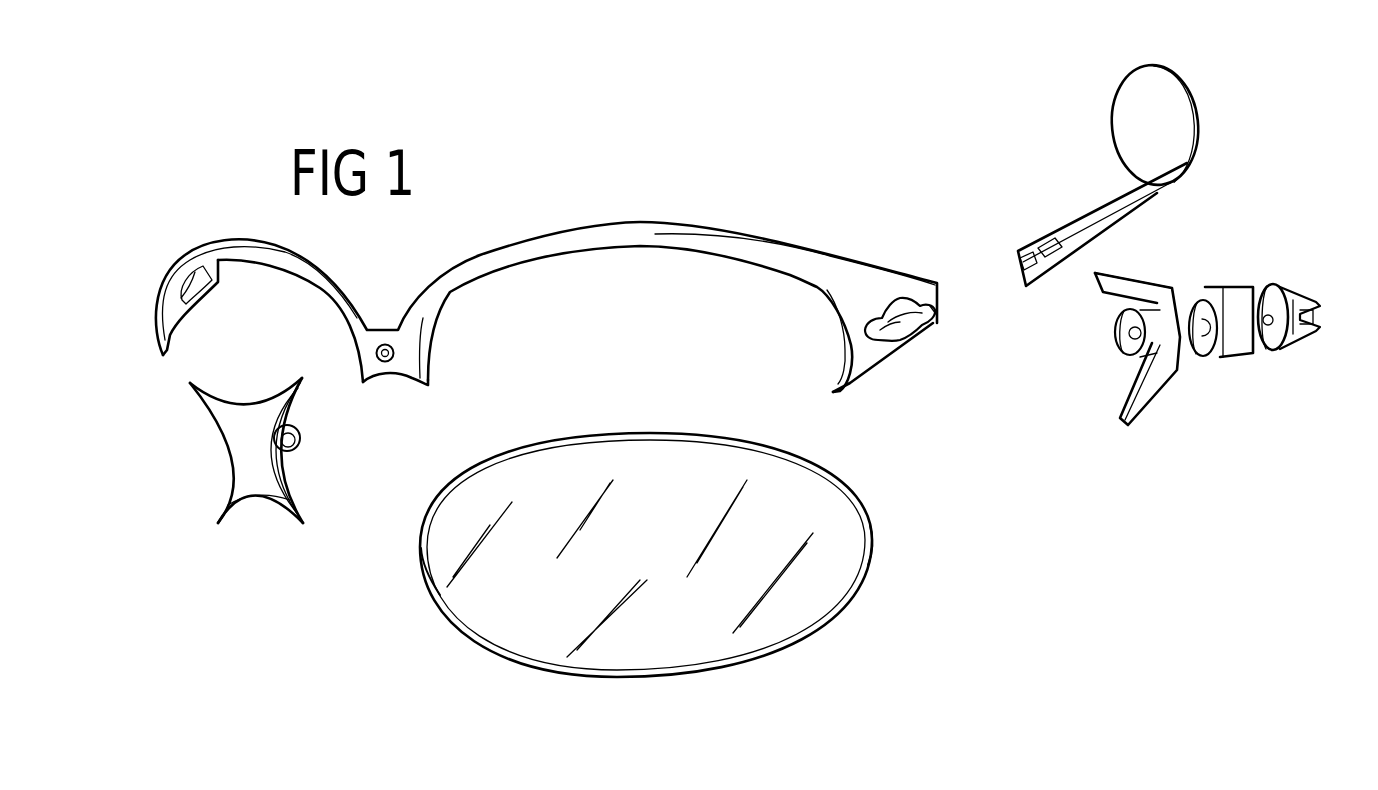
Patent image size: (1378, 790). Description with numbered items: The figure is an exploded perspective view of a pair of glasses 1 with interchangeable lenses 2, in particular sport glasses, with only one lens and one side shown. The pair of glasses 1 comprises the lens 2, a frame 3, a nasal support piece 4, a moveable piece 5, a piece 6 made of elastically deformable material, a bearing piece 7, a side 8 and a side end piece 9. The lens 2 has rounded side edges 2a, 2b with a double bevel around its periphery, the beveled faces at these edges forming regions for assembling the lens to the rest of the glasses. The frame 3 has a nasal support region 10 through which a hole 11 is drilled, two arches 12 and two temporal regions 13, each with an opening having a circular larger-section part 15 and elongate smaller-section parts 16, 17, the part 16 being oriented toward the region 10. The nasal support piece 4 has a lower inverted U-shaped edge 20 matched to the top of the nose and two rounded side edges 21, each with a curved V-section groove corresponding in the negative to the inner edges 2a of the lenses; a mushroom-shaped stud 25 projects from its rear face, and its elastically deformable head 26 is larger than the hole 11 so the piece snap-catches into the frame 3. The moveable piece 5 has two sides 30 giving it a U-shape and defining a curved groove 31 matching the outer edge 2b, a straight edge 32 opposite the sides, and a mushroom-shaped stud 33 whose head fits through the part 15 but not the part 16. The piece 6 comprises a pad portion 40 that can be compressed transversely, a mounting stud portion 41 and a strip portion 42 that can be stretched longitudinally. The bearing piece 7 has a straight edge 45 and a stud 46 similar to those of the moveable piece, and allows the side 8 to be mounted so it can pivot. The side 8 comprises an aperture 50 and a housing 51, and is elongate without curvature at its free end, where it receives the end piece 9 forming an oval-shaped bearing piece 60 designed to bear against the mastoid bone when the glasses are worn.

The pair of glasses 1 is at (1010, 480).
The lens 2 is at (543, 623).
The inner side edge 2a is at (432, 587).
The outer side edge 2b is at (873, 553).
The frame 3 is at (552, 227).
The nasal support piece 4 is at (215, 463).
The moveable piece 5 is at (1167, 407).
The elastically deformable piece 6 is at (1245, 370).
The bearing piece 7 is at (1295, 355).
The side 8 is at (1098, 207).
The side end piece 9 is at (1098, 127).
The nasal support region 10 is at (408, 380).
The hole 11 is at (386, 344).
The arch 12 is at (258, 250).
The temporal region 13 is at (217, 265).
The larger-section part 15 is at (892, 294).
The smaller-section part 16 is at (880, 340).
The smaller-section part 17 is at (920, 327).
The lower inverted U-shaped edge 20 is at (260, 497).
The rounded side edge 21 is at (287, 467).
The mushroom-shaped stud 25 is at (305, 427).
The head 26 is at (300, 450).
The side 30 is at (1105, 274).
The curved groove 31 is at (1128, 355).
The straight edge 32 is at (1180, 295).
The mushroom-shaped stud 33 is at (1112, 338).
The pad portion 40 is at (1237, 296).
The mounting stud portion 41 is at (1193, 360).
The strip portion 42 is at (1213, 297).
The straight edge 45 is at (1297, 343).
The stud 46 is at (1258, 284).
The aperture 50 is at (1048, 240).
The housing 51 is at (1020, 269).
The oval-shaped bearing piece 60 is at (1135, 97).